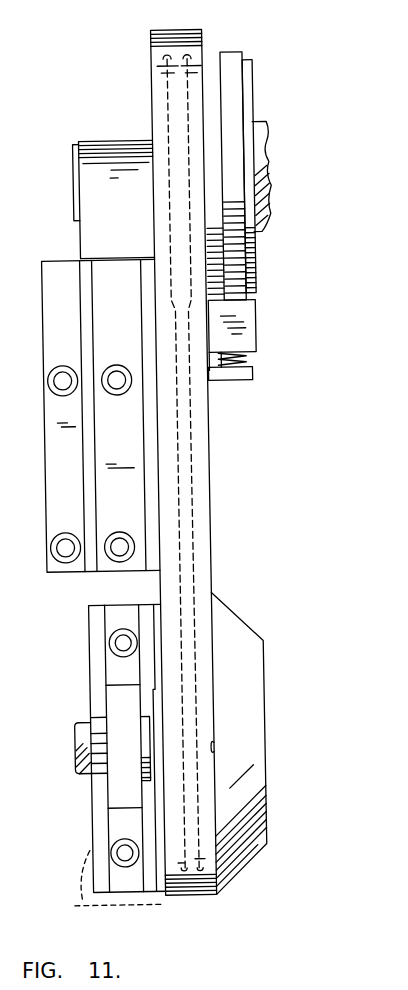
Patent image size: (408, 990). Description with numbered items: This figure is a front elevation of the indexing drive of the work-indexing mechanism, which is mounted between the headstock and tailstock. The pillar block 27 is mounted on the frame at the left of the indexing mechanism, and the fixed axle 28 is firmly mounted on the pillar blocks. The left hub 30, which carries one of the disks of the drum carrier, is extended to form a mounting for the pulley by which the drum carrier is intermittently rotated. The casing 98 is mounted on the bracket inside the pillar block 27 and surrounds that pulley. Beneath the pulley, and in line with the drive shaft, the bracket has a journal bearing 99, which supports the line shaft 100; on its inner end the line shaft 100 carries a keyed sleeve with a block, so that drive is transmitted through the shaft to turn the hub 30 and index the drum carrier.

The casing 98 is at (190, 476).
The hub 30 is at (204, 82).
The fixed axle 28 is at (69, 191).
The pillar block 27 is at (74, 303).
The journal bearing 99 is at (101, 828).
The line shaft 100 is at (64, 742).